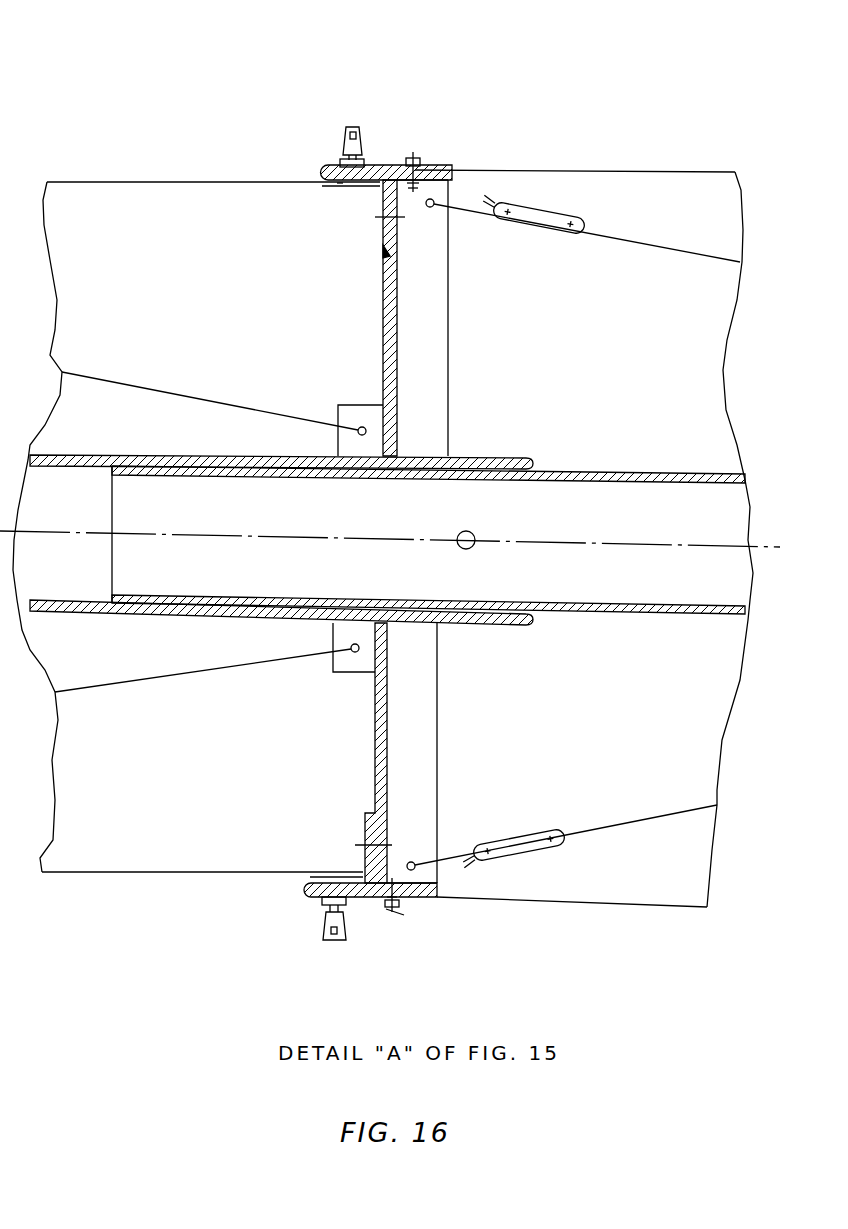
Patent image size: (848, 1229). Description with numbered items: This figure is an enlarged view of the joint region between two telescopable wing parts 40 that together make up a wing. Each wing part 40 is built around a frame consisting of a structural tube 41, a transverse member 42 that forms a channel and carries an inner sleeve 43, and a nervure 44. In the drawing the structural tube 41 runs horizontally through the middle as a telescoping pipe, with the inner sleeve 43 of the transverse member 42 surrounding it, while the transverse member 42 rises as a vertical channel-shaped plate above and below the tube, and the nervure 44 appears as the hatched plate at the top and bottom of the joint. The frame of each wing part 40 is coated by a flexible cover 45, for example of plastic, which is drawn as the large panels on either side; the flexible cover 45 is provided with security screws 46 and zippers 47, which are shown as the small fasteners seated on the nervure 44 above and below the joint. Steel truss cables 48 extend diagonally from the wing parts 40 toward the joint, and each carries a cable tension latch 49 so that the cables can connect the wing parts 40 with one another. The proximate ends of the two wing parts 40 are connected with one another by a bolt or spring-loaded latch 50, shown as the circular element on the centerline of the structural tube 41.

The wing part 40 is at (185, 230).
The structural tube 41 is at (263, 585).
The transverse member 42 is at (425, 338).
The inner sleeve 43 is at (463, 618).
The nervure 44 is at (455, 166).
The flexible cover 45 is at (243, 182).
The security screws 46 is at (413, 163).
The zippers 47 is at (350, 122).
The steel truss cables 48 is at (182, 673).
The cable tension latches 49 is at (520, 848).
The bolt or spring-loaded latch 50 is at (470, 531).